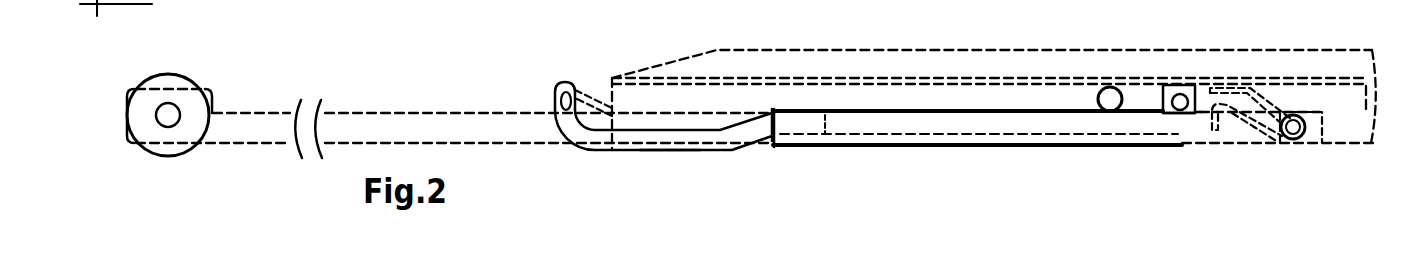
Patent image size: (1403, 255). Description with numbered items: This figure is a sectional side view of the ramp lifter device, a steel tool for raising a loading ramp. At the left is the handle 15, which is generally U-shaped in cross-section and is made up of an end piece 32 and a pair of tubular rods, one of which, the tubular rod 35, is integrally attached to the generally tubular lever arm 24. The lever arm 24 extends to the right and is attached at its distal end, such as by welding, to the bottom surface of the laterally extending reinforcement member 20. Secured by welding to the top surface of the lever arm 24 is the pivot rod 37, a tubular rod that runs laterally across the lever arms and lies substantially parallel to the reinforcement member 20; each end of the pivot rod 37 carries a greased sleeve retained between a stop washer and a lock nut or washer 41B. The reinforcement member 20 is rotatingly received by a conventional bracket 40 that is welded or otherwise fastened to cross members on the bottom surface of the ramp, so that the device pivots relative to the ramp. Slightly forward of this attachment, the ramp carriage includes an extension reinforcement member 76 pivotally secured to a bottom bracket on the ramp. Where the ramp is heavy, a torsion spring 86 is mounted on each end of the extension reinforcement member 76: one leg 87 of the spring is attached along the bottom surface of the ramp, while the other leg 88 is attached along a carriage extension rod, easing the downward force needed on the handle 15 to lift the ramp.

The handle 15 is at (610, 156).
The end piece 32 is at (565, 83).
The tubular rod 35 is at (655, 148).
The lever arm 24 is at (983, 125).
The pivot rod 37 is at (1118, 112).
The lock nut or washer 41B is at (1118, 113).
The bracket 40 is at (1195, 85).
The reinforcement member 20 is at (1187, 113).
The other leg of spring 88 is at (1253, 87).
The one leg of spring 87 is at (1240, 118).
The torsion spring 86 is at (1316, 155).
The extension reinforcement member 76 is at (1313, 125).